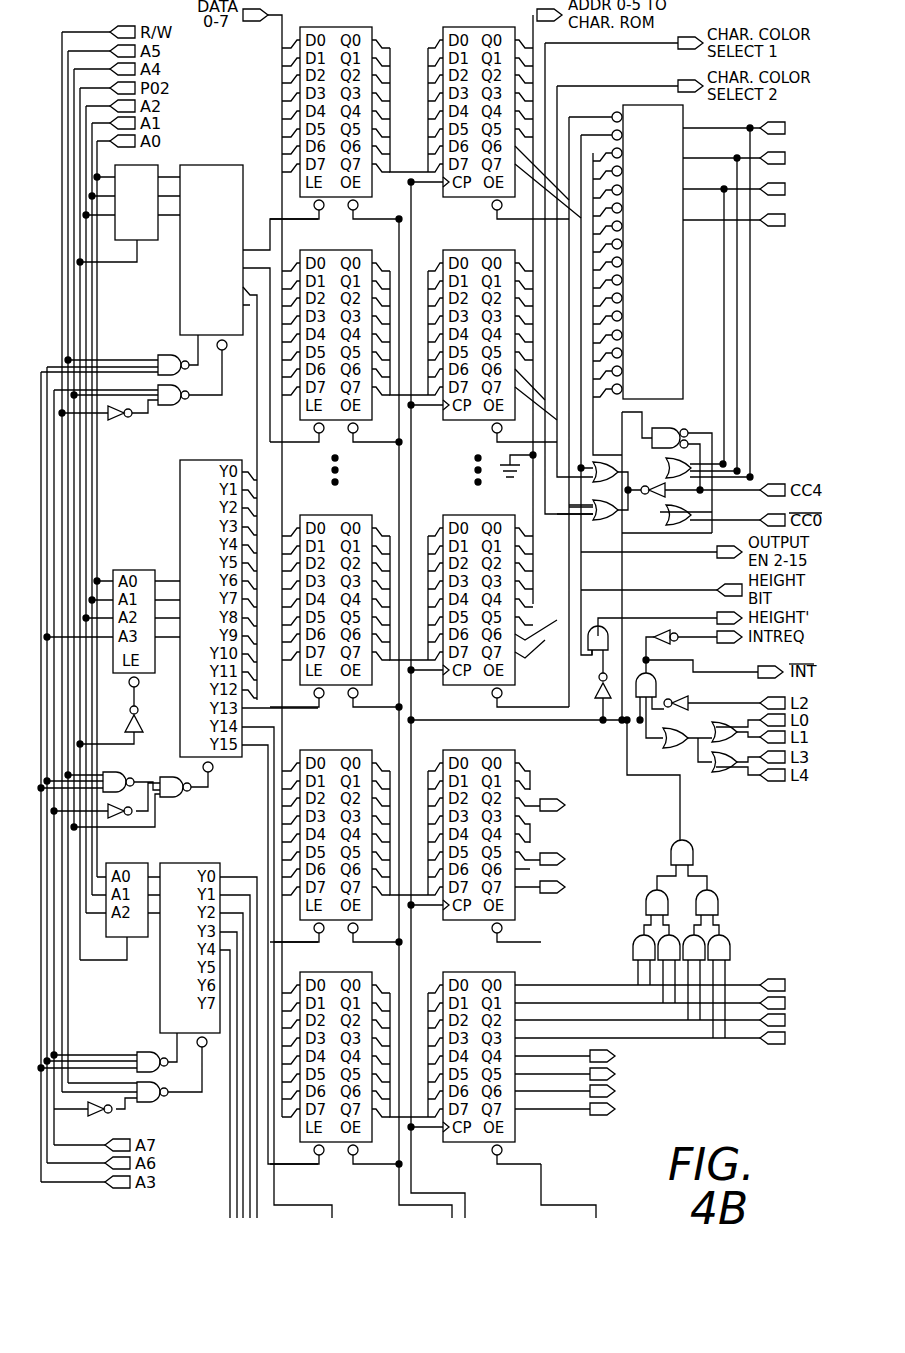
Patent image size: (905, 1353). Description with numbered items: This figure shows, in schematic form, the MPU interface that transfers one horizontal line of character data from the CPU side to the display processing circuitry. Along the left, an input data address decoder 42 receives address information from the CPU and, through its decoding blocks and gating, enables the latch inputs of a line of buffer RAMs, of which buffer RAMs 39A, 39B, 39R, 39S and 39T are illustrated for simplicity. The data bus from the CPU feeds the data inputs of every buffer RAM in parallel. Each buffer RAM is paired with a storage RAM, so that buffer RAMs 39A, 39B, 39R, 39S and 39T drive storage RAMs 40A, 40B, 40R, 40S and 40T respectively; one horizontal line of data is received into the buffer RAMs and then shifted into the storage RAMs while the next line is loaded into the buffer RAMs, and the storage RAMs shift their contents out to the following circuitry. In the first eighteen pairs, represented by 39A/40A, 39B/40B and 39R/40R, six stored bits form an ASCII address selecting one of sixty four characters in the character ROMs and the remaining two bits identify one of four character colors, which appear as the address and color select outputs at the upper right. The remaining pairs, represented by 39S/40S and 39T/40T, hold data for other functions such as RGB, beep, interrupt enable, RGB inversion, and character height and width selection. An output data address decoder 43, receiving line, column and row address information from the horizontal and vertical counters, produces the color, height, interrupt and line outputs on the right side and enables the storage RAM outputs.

The buffer RAM 39A is at (344, 27).
The buffer RAM 39B is at (344, 250).
The buffer RAM 39R is at (344, 515).
The buffer RAM 39S is at (344, 750).
The buffer RAM 39T is at (344, 972).
The storage RAM 40A is at (488, 27).
The storage RAM 40B is at (488, 250).
The storage RAM 40R is at (488, 515).
The storage RAM 40S is at (488, 750).
The storage RAM 40T is at (488, 972).
The input data address decoder 42 is at (232, 109).
The output data address decoder 43 is at (800, 342).